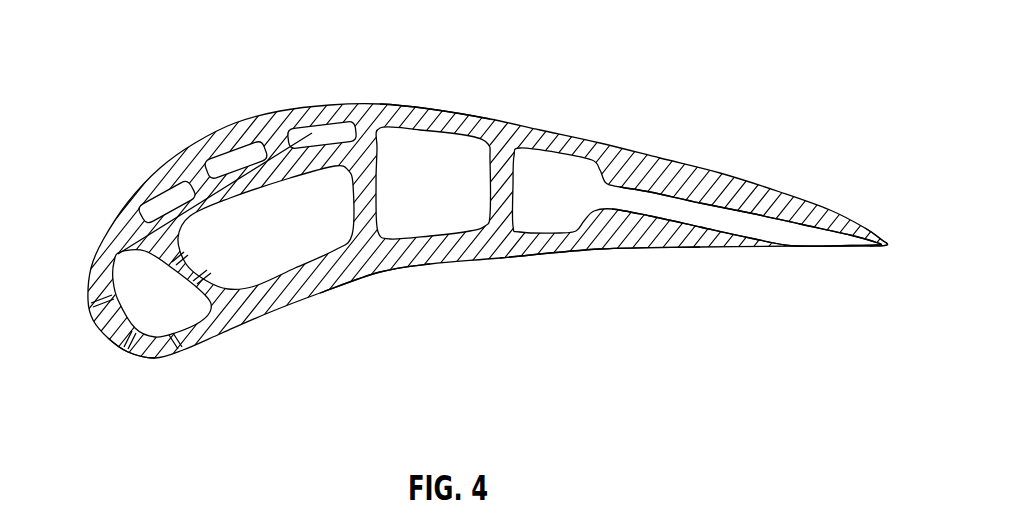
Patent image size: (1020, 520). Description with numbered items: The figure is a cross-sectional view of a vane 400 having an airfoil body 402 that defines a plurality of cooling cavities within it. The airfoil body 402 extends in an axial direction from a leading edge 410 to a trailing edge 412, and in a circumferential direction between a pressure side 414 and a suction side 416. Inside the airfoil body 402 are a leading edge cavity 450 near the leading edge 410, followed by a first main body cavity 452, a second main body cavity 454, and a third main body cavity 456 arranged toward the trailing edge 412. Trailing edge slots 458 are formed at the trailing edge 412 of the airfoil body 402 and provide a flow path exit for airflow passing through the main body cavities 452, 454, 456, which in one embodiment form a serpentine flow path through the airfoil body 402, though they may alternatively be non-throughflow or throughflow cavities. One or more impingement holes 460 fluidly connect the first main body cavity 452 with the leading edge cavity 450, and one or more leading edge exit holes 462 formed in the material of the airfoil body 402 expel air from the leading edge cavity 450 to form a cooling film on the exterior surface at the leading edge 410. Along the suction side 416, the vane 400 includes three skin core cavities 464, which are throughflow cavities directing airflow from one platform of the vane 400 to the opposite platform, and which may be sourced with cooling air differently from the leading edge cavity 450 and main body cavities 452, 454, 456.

The vane 400 is at (738, 42).
The airfoil body 402 is at (600, 231).
The leading edge 410 is at (118, 346).
The trailing edge 412 is at (888, 248).
The pressure side 414 is at (413, 269).
The suction side 416 is at (442, 111).
The leading edge cavity 450 is at (176, 311).
The first main body cavity 452 is at (333, 213).
The second main body cavity 454 is at (441, 196).
The third main body cavity 456 is at (574, 207).
The trailing edge slots 458 is at (739, 220).
The impingement holes 460 is at (189, 251).
The leading edge exit holes 462 is at (95, 308).
The skin core cavities 464 is at (306, 133).